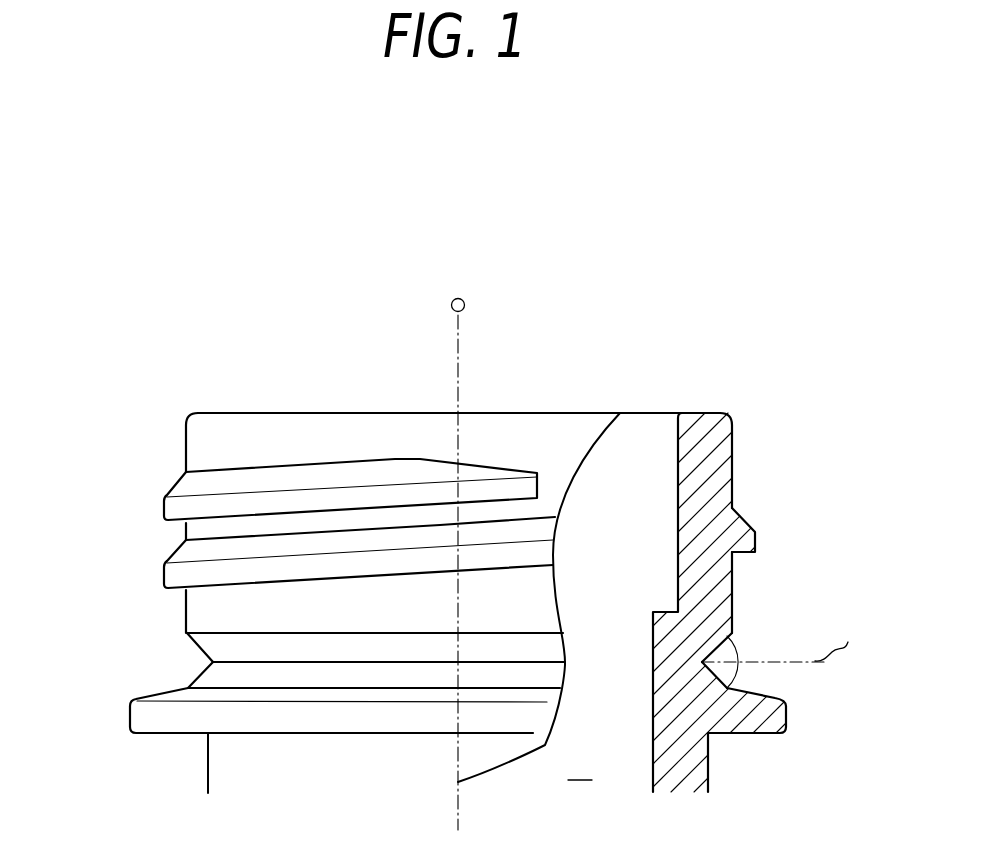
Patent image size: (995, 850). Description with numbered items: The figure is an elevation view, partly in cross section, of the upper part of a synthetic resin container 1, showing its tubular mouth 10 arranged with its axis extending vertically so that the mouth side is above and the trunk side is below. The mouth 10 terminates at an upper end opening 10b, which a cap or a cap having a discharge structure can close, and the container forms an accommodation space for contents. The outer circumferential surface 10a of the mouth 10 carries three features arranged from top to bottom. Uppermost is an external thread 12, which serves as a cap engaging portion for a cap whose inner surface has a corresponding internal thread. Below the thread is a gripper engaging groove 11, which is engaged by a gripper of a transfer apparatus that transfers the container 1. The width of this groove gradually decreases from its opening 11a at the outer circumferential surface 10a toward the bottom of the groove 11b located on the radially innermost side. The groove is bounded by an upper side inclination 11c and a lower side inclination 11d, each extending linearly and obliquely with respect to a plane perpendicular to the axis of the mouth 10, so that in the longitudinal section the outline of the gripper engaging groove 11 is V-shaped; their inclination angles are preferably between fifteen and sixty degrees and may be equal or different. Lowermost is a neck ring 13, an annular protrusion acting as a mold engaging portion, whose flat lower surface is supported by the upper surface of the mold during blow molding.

The synthetic resin container 1 is at (725, 343).
The mouth 10 is at (141, 538).
The outer circumferential surface 10a is at (186, 450).
The upper end opening 10b is at (647, 413).
The gripper engaging groove 11 is at (143, 643).
The opening 11a is at (187, 633).
The bottom of the groove 11b is at (213, 662).
The upper side inclination 11c is at (196, 643).
The lower side inclination 11d is at (196, 680).
The external thread 12 is at (165, 490).
The neck ring 13 is at (130, 717).